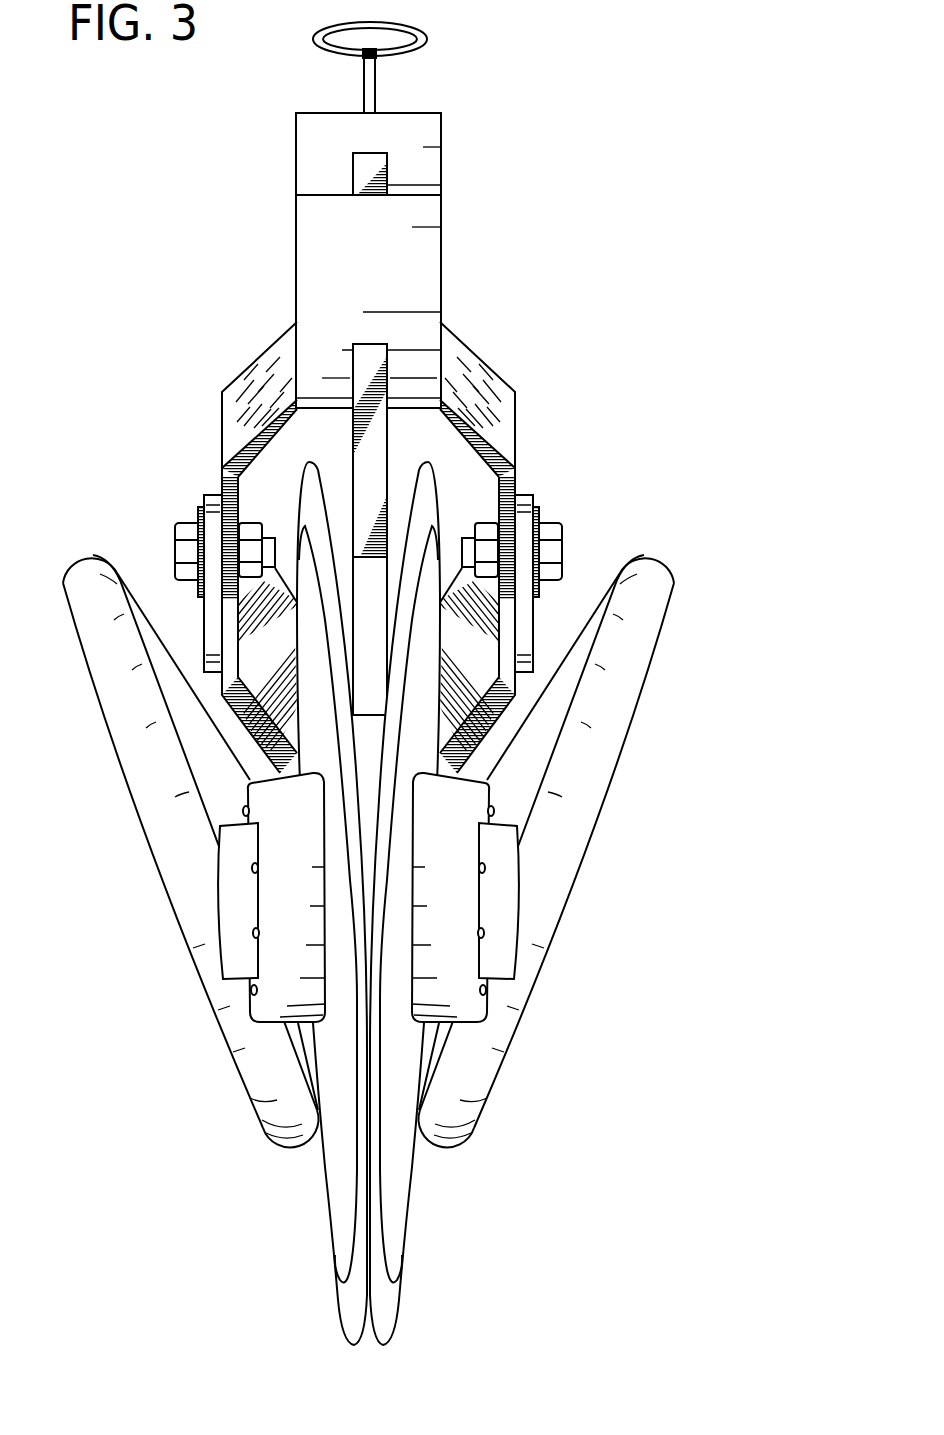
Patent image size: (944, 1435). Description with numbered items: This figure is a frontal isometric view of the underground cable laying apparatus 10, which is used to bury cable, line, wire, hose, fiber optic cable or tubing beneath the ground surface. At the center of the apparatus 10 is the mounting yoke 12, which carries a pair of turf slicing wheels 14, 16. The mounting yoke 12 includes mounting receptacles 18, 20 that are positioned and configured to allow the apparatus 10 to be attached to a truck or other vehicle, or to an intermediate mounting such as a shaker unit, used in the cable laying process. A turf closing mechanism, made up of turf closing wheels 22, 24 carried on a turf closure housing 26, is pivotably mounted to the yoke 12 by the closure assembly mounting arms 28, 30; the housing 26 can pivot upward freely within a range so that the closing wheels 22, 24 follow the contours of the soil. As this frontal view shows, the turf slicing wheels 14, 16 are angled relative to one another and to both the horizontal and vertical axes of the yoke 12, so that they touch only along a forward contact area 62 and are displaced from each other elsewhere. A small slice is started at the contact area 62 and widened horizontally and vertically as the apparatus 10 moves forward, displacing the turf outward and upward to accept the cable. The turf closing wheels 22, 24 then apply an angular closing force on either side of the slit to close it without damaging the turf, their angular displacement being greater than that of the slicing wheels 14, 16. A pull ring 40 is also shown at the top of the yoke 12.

The underground cable laying apparatus 10 is at (150, 230).
The mounting yoke 12 is at (363, 176).
The turf slicing wheel 14 is at (398, 1244).
The turf slicing wheel 16 is at (342, 1242).
The mounting receptacle 18 is at (432, 128).
The mounting receptacle 20 is at (432, 213).
The turf closing wheel 22 is at (509, 1018).
The turf closing wheel 24 is at (222, 1022).
The turf closure housing 26 is at (215, 657).
The closure assembly mounting arm 28 is at (465, 360).
The closure assembly mounting arm 30 is at (265, 372).
The pull ring 40 is at (422, 38).
The contact area 62 is at (367, 1167).